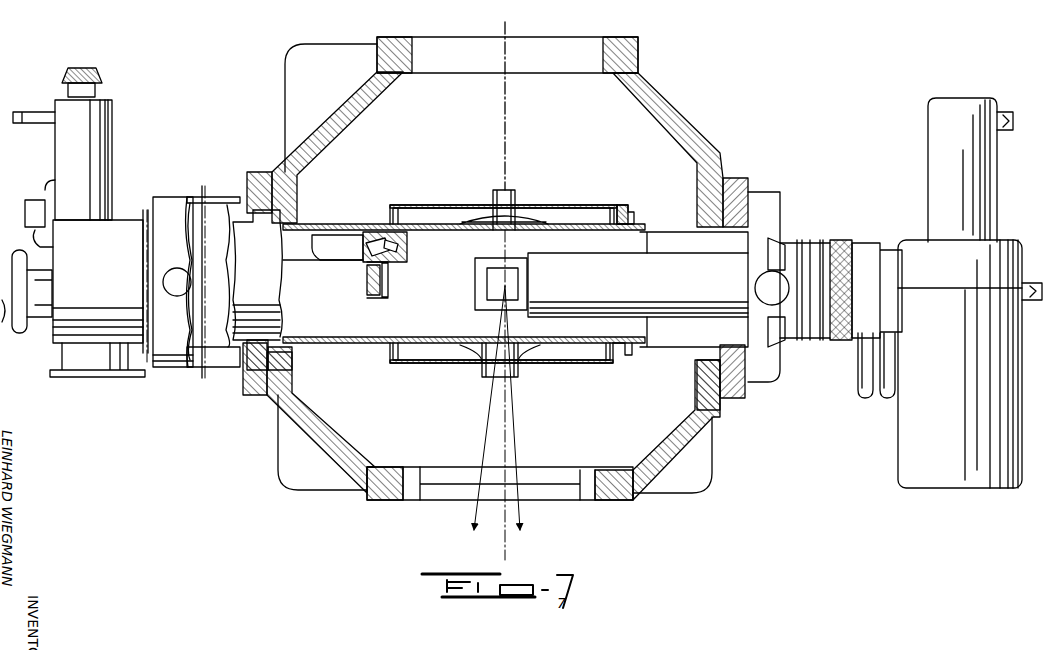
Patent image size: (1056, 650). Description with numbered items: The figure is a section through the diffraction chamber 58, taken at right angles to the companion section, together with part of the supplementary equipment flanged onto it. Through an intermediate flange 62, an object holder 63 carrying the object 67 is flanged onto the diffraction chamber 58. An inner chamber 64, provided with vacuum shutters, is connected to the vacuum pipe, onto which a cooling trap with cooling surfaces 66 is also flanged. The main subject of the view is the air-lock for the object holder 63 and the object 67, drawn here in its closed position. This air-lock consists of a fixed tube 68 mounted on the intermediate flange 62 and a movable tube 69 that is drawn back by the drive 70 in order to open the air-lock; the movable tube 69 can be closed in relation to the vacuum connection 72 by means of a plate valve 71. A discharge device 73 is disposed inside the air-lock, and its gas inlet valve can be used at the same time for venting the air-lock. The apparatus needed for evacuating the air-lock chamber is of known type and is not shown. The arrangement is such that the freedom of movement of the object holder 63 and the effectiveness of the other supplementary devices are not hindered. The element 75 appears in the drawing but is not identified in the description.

The diffraction chamber 58 is at (634, 55).
The intermediate flange 62 is at (734, 167).
The object holder 63 is at (775, 200).
The inner chamber 64 is at (597, 210).
The cooling surfaces 66 is at (480, 355).
The object 67 is at (487, 284).
The fixed tube 68 is at (671, 224).
The movable tube 69 is at (445, 224).
The drive 70 is at (168, 360).
The plate valve 71 is at (365, 316).
The vacuum connection 72 is at (105, 367).
The discharge device 73 is at (377, 228).
The lower channel 75 is at (390, 352).